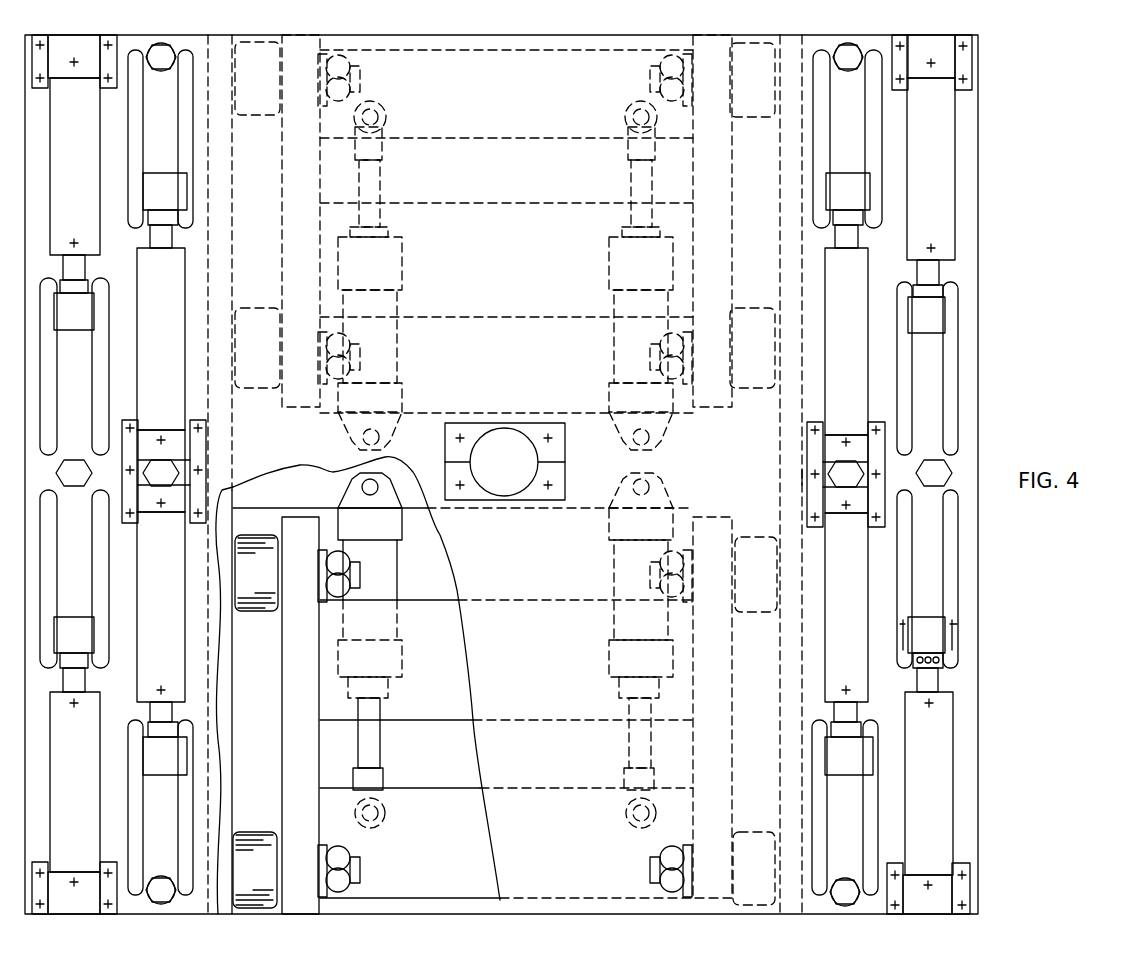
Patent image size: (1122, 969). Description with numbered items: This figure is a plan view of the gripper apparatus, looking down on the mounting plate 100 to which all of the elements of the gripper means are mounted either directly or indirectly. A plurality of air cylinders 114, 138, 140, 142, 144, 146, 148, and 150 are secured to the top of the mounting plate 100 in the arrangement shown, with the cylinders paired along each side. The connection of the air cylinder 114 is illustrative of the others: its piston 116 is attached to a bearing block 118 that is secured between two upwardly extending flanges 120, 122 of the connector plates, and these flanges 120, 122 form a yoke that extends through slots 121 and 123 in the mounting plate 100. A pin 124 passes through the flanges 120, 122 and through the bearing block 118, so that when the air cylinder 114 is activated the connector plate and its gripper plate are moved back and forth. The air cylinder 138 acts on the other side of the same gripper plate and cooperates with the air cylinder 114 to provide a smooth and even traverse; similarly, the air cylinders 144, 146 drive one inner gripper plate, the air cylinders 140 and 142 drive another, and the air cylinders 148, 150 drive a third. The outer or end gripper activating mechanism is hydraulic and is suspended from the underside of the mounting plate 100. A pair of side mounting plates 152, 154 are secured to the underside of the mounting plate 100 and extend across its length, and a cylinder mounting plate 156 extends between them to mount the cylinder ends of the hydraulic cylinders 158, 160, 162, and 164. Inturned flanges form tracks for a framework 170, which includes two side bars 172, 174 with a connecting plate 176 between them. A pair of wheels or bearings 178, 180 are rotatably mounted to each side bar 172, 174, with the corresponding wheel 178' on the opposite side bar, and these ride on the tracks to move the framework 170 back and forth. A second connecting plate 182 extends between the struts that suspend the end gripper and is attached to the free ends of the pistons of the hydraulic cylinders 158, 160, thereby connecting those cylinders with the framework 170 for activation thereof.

The mounting plate 100 is at (965, 188).
The air cylinder 114 is at (952, 820).
The piston 116 is at (930, 683).
The bearing block 118 is at (942, 646).
The flange 120 is at (950, 656).
The slot 121 is at (950, 580).
The flange 122 is at (897, 652).
The slot 123 is at (905, 555).
The pin 124 is at (960, 636).
The air cylinder 138 is at (95, 819).
The air cylinder 140 is at (952, 196).
The air cylinder 142 is at (97, 194).
The air cylinder 144 is at (868, 646).
The air cylinder 146 is at (186, 640).
The air cylinder 148 is at (868, 376).
The air cylinder 150 is at (186, 372).
The side mounting plate 152 is at (222, 540).
The side mounting plate 154 is at (795, 478).
The cylinder mounting plate 156 is at (318, 500).
The hydraulic cylinder 158 is at (388, 565).
The hydraulic cylinder 160 is at (606, 569).
The hydraulic cylinder 162 is at (383, 357).
The hydraulic cylinder 164 is at (627, 357).
The framework 170 is at (418, 614).
The side bar 172 is at (305, 713).
The side bar 174 is at (712, 738).
The connecting plate 176 is at (457, 680).
The wheel or bearing 178 is at (257, 593).
The wheel or bearing 178' is at (758, 597).
The wheel or bearing 180 is at (275, 832).
The second connecting plate 182 is at (457, 849).